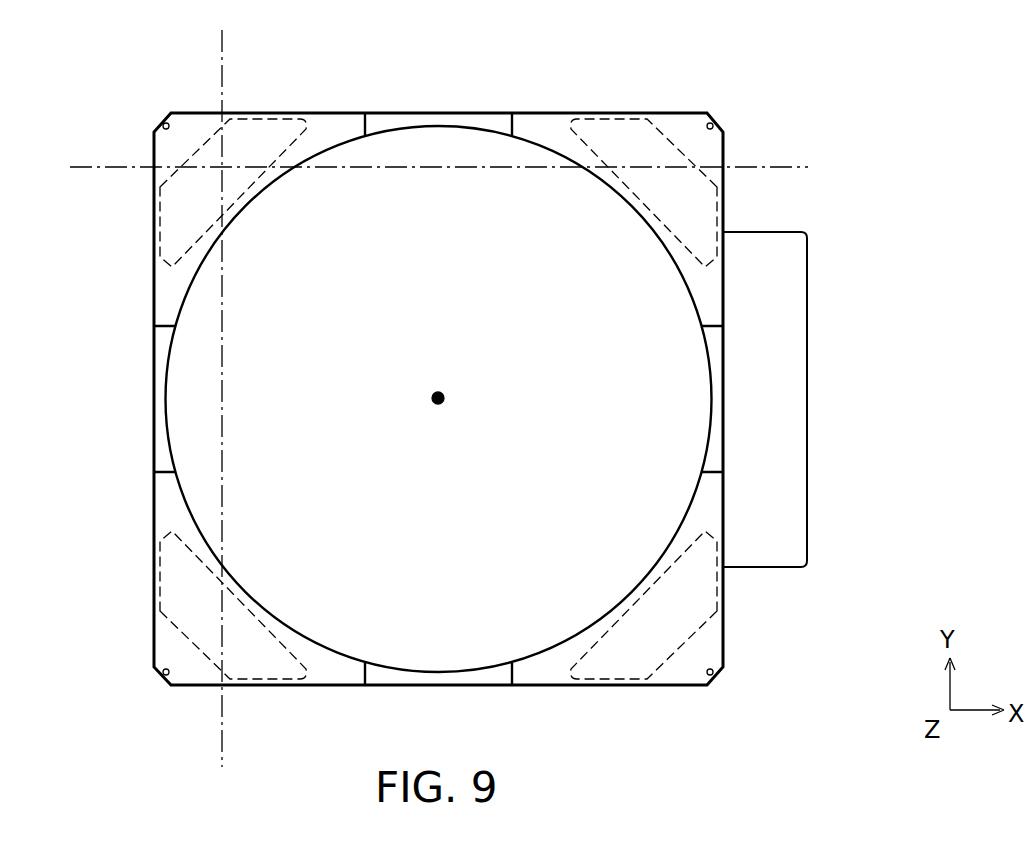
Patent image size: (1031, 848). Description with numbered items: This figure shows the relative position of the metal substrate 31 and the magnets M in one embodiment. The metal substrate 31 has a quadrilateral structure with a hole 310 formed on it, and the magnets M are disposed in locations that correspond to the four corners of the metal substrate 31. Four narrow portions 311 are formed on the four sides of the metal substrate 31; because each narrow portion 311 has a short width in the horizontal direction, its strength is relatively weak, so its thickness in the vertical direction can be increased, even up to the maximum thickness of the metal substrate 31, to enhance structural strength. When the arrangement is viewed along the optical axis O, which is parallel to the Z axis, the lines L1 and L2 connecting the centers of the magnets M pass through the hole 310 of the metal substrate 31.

The metal substrate 31 is at (154, 366).
The hole 310 is at (533, 150).
The narrow portion 311 is at (445, 120).
The optical axis O is at (445, 401).
The magnets M is at (170, 216).
The line connecting the centers of the magnetic elements L1 is at (223, 42).
The line connecting the centers of the magnetic elements L2 is at (98, 156).